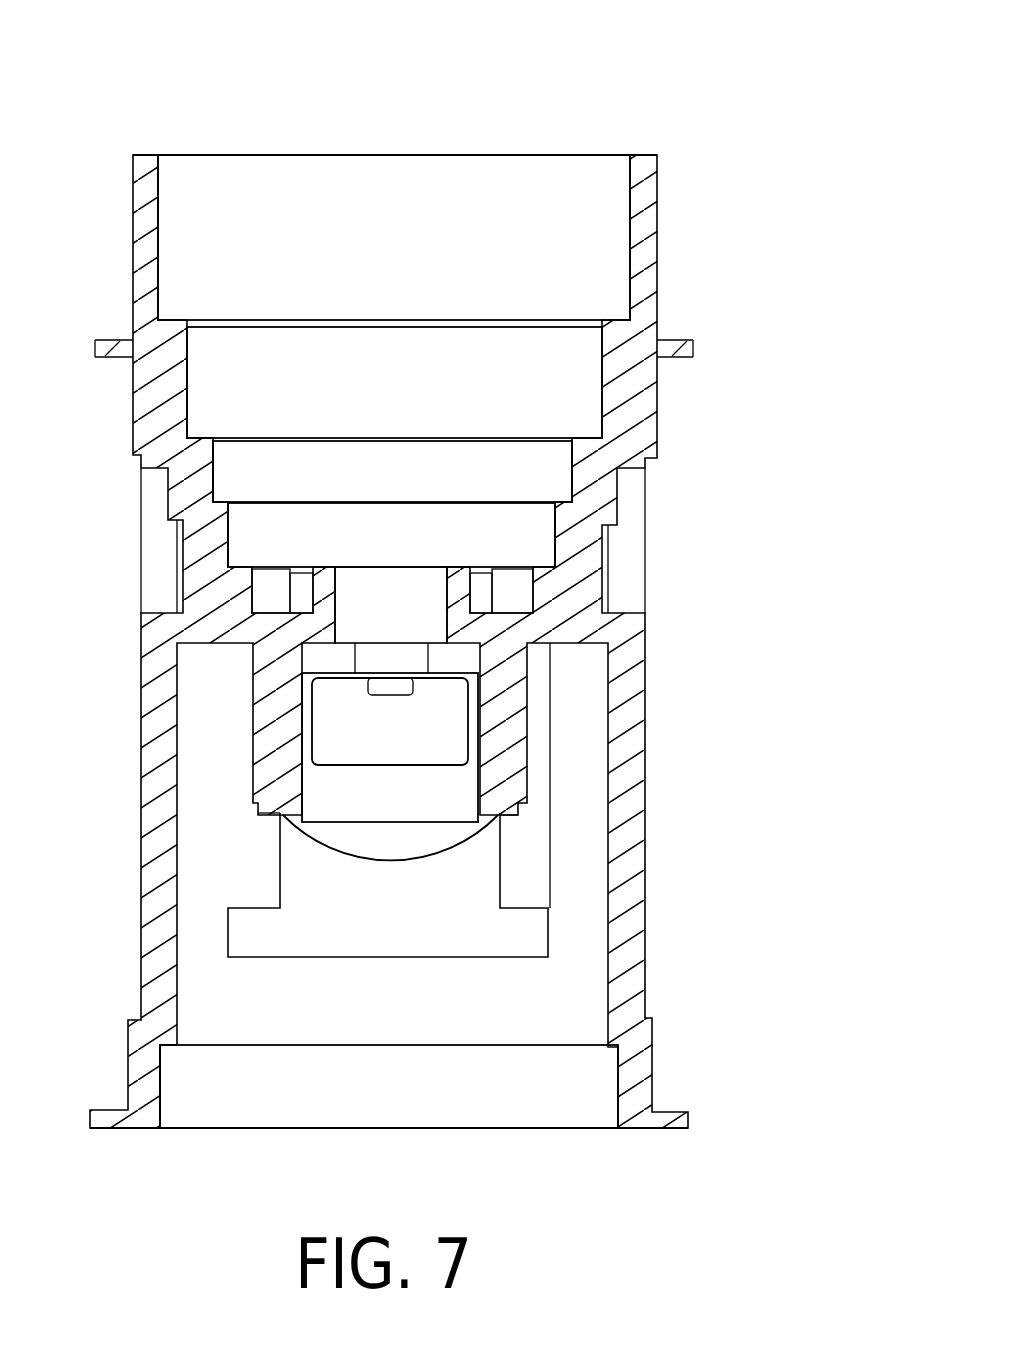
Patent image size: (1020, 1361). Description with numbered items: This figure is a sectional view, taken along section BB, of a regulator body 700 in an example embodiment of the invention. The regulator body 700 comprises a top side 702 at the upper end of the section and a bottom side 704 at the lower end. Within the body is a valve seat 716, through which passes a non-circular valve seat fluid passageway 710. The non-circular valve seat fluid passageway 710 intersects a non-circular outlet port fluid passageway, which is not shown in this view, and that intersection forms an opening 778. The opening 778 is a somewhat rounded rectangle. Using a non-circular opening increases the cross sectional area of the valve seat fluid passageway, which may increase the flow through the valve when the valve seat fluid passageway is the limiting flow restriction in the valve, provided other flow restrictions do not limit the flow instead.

The regulator body 700 is at (306, 92).
The top side 702 is at (588, 157).
The bottom side 704 is at (583, 1130).
The non-circular valve seat fluid passageway 710 is at (478, 783).
The opening 778 is at (468, 735).
The valve seat 716 is at (528, 797).